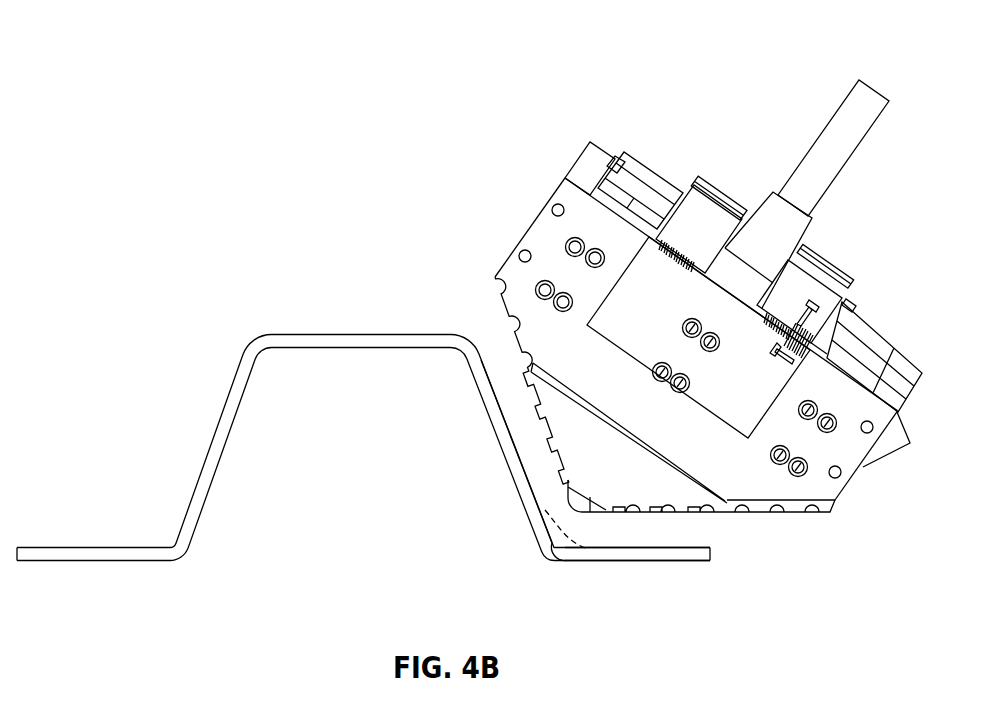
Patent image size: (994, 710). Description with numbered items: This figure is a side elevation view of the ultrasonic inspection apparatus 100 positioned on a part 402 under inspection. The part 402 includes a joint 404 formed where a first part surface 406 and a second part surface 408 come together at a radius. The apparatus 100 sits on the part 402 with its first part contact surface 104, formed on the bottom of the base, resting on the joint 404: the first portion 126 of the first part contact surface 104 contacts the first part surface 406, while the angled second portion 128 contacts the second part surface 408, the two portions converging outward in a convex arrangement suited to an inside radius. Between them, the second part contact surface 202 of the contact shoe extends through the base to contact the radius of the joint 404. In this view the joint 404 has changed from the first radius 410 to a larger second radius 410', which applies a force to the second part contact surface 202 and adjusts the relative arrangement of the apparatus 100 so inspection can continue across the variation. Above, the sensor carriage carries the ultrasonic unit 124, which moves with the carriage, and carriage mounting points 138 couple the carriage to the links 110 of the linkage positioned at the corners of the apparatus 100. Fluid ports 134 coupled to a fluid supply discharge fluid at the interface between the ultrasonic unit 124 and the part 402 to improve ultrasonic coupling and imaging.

The apparatus 100 is at (670, 329).
The first part contact surface 104 is at (694, 519).
The links 110 is at (900, 338).
The ultrasonic unit 124 is at (878, 88).
The first portion 126 is at (497, 312).
The second portion 128 is at (795, 514).
The fluid ports 134 is at (725, 195).
The carriage mounting points 138 is at (858, 320).
The second part contact surface 202 is at (588, 513).
The part 402 is at (327, 328).
The joint 404 is at (522, 520).
The first part surface 406 is at (510, 435).
The second part surface 408 is at (650, 550).
The first radius 410 is at (525, 567).
The second radius 410' is at (534, 566).